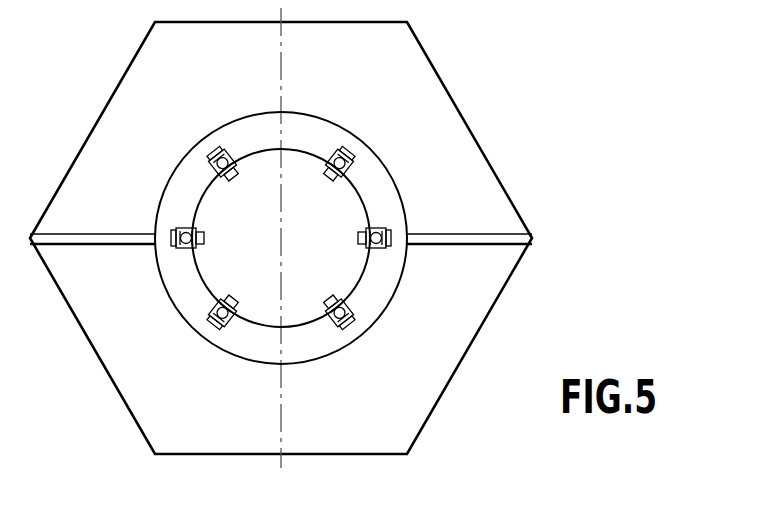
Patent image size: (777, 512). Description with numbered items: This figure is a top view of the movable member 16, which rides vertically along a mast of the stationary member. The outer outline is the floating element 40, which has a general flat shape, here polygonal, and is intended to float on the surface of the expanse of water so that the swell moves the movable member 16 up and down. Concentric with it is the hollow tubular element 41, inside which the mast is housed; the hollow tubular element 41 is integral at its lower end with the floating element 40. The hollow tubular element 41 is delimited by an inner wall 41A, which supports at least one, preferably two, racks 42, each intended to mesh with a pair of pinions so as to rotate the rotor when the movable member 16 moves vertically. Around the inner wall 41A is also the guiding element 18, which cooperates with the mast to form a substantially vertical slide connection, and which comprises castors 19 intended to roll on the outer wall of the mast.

The movable member 16 is at (480, 120).
The floating element 40 is at (495, 202).
The hollow tubular element 41 is at (383, 273).
The inner wall 41A is at (310, 157).
The rack 42 is at (374, 231).
The guiding element 18 is at (352, 143).
The castor 19 is at (230, 170).